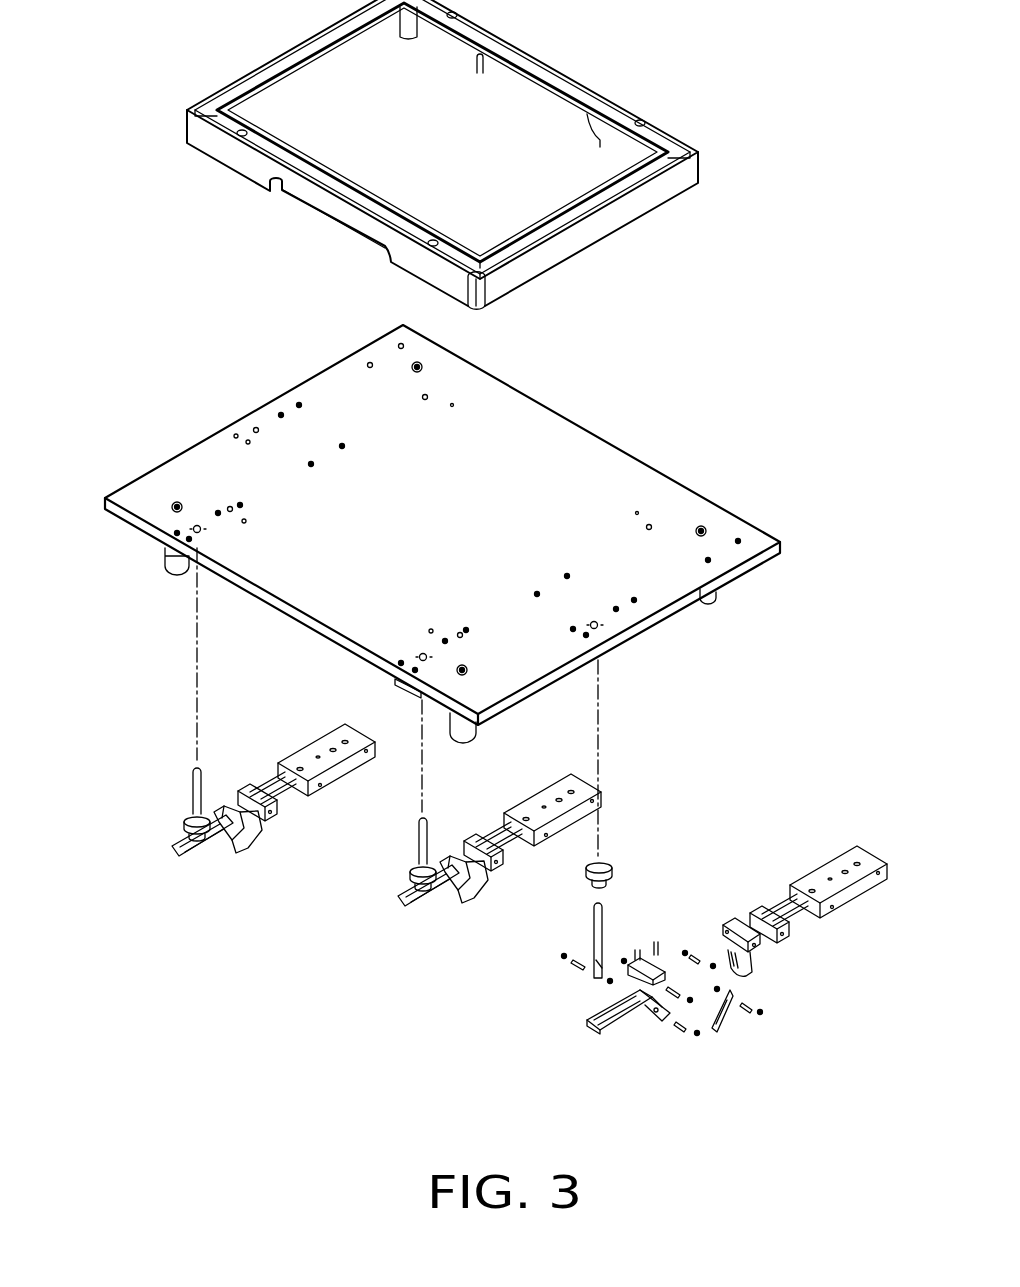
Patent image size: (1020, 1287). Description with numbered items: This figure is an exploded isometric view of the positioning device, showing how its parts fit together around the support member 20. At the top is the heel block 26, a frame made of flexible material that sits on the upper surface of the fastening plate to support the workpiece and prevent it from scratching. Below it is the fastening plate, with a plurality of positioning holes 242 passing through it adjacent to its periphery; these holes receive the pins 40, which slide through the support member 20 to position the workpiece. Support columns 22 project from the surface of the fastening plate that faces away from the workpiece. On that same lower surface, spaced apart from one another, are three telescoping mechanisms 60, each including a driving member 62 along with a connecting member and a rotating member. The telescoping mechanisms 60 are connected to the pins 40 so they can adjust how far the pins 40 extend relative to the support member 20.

The support member 20 is at (755, 318).
The heel block 26 is at (615, 220).
The support columns 22 is at (464, 733).
The positioning holes 242 is at (197, 525).
The telescoping mechanisms 60 is at (283, 830).
The driving member 62 is at (837, 862).
The pins 40 is at (604, 920).